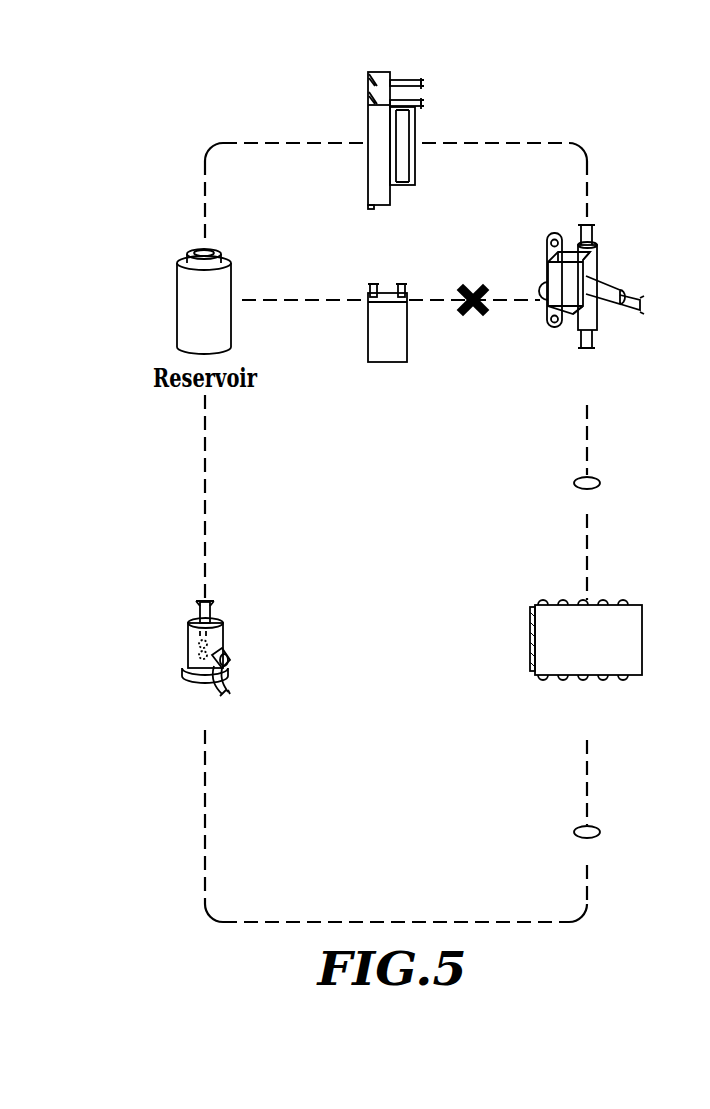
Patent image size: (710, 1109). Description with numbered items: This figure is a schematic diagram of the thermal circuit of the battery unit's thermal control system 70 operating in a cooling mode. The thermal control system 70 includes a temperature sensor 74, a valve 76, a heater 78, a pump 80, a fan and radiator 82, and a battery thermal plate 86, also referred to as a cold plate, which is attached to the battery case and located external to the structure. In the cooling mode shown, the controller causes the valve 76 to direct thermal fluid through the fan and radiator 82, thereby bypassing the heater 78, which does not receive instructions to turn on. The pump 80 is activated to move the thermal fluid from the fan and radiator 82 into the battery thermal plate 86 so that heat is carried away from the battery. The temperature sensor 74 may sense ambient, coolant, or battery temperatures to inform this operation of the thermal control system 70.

The thermal management system 70 is at (616, 108).
The temperature sensor 74 is at (587, 670).
The 3-port valve 76 is at (598, 272).
The low voltage heater 78 is at (375, 333).
The pump 80 is at (216, 640).
The low temperature radiator and fan 82 is at (377, 129).
The battery plate 86 is at (577, 650).